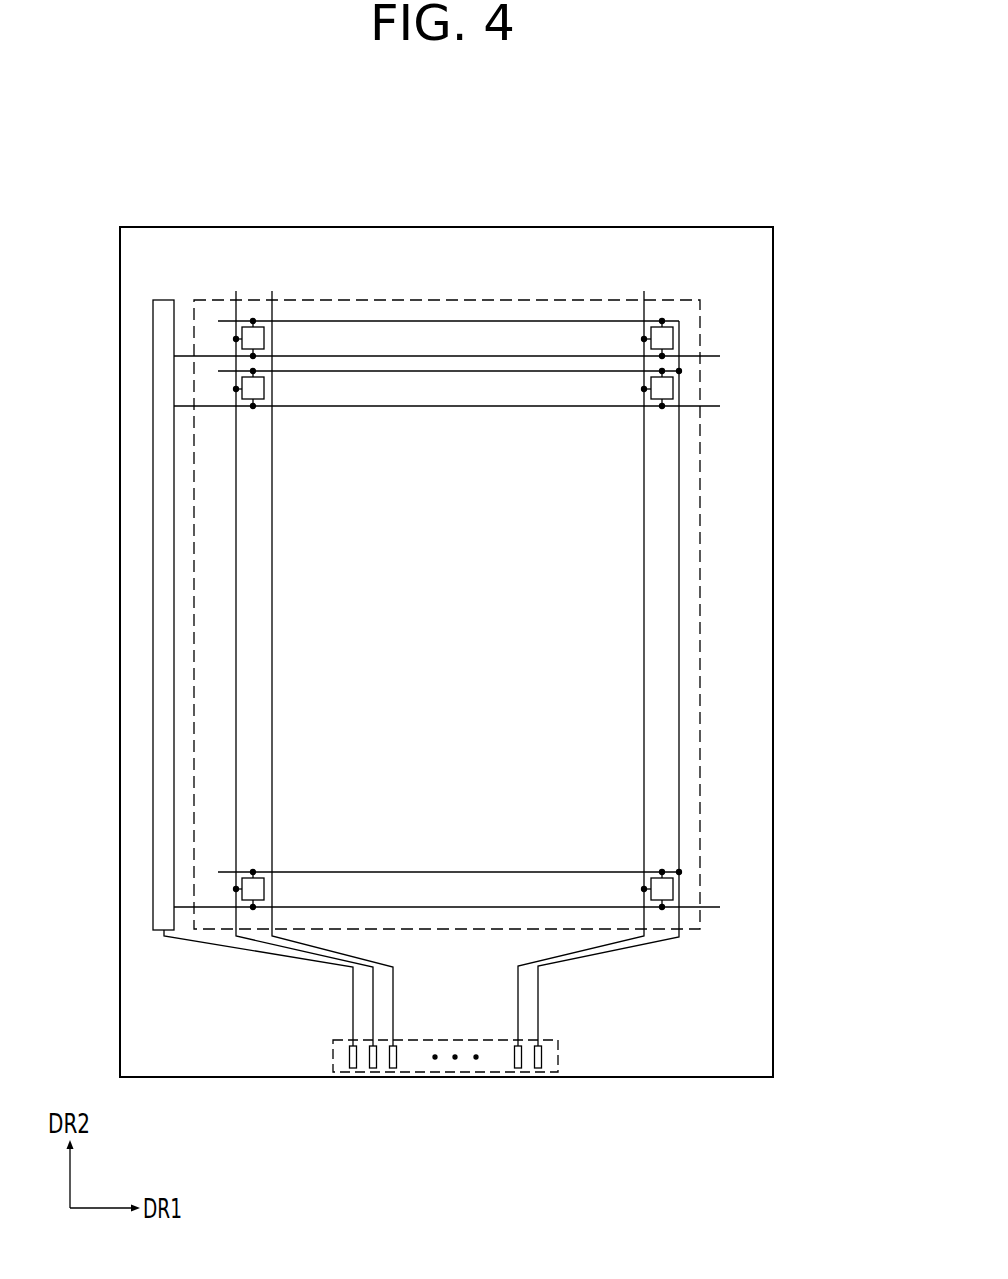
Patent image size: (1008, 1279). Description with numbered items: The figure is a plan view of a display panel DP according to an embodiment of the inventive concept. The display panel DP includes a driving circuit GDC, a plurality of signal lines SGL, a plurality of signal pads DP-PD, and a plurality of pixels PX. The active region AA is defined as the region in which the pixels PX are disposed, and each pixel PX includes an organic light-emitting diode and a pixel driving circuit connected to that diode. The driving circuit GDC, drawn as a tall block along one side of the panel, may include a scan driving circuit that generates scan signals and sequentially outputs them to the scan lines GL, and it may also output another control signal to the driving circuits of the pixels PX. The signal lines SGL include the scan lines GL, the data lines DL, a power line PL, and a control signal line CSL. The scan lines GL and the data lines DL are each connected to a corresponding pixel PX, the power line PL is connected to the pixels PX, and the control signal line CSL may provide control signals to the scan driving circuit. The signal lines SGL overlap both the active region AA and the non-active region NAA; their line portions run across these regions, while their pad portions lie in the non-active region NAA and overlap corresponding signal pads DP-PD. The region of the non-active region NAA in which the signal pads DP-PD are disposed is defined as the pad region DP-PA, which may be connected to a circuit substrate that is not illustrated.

The display panel DP is at (137, 188).
The active region AA is at (700, 443).
The non-active region NAA is at (750, 519).
The driving circuit GDC is at (163, 615).
The pixels PX is at (234, 889).
The signal lines SGL is at (447, 668).
The data lines DL is at (274, 807).
The control signal line CSL is at (258, 946).
The scan lines GL is at (488, 905).
The power line PL is at (677, 807).
The pad region DP-PA is at (558, 1057).
The signal pads DP-PD is at (540, 1085).